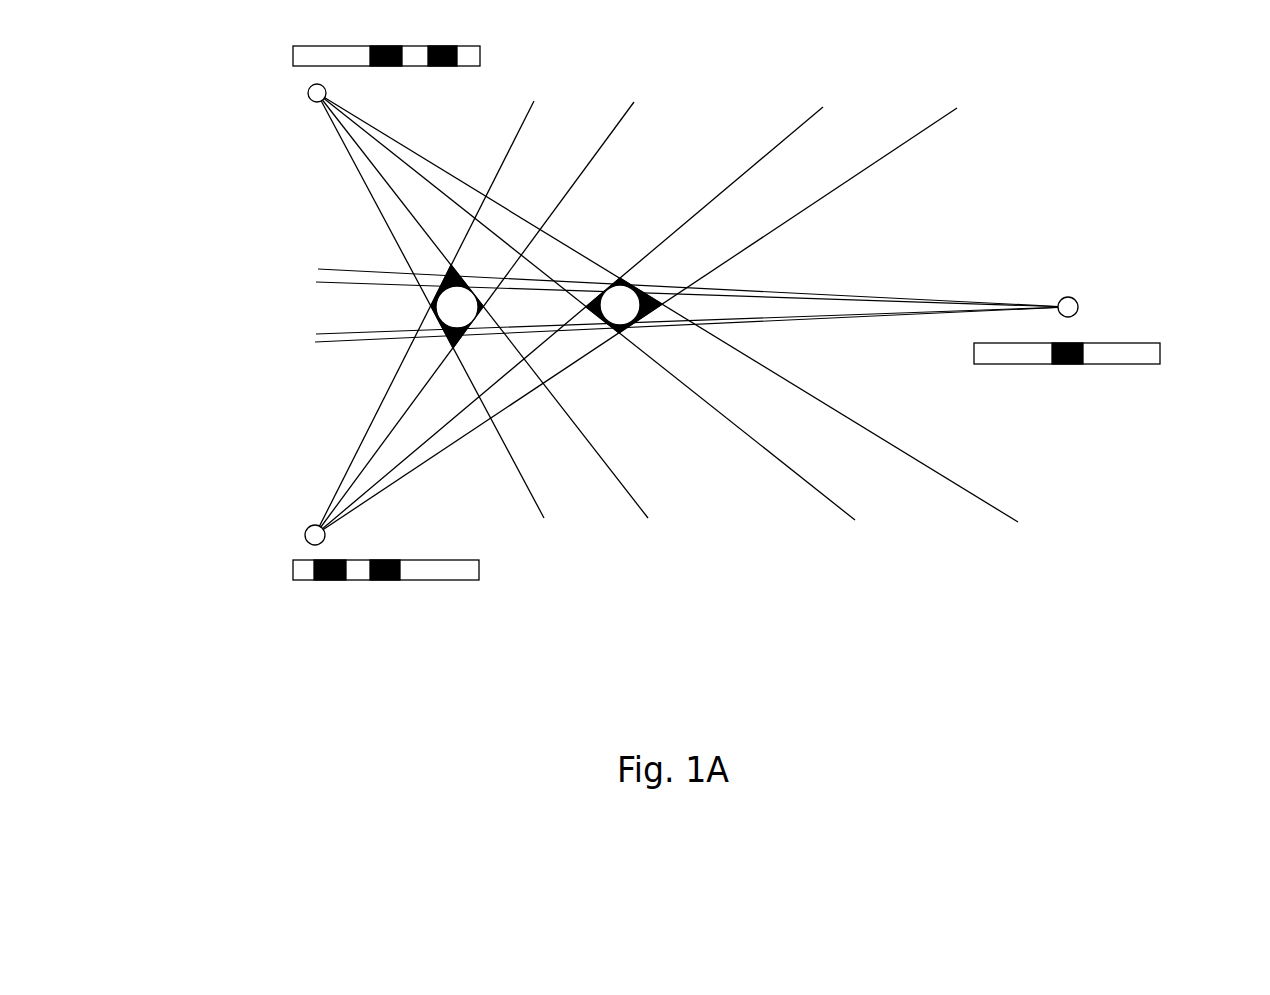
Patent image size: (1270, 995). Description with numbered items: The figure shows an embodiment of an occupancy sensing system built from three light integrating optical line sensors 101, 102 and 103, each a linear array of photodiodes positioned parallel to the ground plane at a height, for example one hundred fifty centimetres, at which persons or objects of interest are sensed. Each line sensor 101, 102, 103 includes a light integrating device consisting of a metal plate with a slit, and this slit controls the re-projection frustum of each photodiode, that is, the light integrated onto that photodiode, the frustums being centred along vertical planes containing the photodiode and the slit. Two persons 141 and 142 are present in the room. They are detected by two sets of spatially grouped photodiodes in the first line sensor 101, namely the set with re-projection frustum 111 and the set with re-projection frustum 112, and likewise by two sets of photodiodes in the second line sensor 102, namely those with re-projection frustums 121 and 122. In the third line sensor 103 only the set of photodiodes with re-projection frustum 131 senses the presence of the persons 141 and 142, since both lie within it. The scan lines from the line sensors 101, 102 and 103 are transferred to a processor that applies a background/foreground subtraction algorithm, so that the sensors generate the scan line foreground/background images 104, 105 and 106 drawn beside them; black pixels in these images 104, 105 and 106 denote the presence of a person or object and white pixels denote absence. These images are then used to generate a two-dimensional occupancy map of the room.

The first light integrating optical line sensor 101 is at (308, 93).
The second light integrating optical line sensor 102 is at (305, 535).
The third light integrating optical line sensor 103 is at (1068, 296).
The scan line foreground/background image 104 is at (293, 56).
The scan line foreground/background image 105 is at (293, 572).
The scan line foreground/background image 106 is at (974, 352).
The re-projection frustum 111 is at (458, 188).
The re-projection frustum 112 is at (385, 190).
The re-projection frustum 121 is at (457, 430).
The re-projection frustum 122 is at (402, 383).
The re-projection frustum 131 is at (855, 300).
The person 141 is at (437, 306).
The person 142 is at (624, 290).